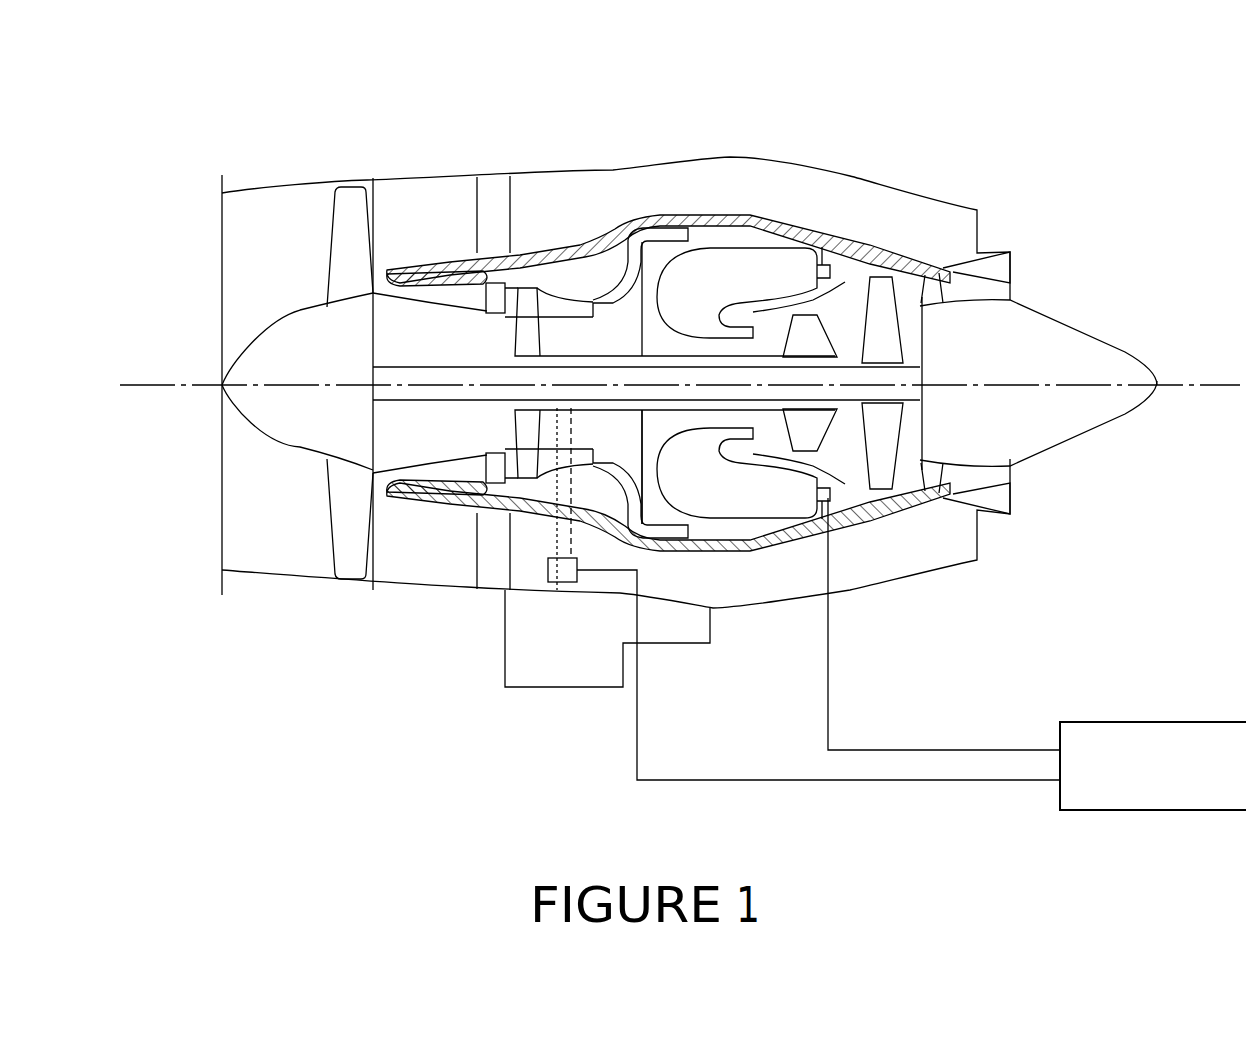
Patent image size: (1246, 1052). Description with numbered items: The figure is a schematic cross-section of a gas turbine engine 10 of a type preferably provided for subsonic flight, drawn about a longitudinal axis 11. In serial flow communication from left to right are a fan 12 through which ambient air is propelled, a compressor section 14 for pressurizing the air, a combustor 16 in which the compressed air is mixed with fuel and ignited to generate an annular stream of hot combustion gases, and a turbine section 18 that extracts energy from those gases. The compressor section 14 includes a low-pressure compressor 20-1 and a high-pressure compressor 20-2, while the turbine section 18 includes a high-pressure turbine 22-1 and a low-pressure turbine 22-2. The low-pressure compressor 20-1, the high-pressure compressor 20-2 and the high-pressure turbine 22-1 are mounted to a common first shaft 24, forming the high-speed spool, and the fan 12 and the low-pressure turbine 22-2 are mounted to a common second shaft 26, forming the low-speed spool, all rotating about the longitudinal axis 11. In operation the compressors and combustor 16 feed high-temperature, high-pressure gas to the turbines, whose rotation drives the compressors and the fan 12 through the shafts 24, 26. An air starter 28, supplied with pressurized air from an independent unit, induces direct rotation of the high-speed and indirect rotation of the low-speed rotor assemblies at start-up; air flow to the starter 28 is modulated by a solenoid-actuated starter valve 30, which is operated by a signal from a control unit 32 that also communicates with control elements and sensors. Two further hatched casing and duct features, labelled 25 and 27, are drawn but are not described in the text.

The gas turbine engine 10 is at (864, 119).
The longitudinal axis 11 is at (1189, 383).
The fan 12 is at (346, 509).
The compressor section 14 is at (557, 300).
The combustor 16 is at (738, 263).
The turbine section 18 is at (847, 435).
The low-pressure compressor 20-1 is at (522, 462).
The high-pressure compressor 20-2 is at (644, 410).
The high-pressure turbine 22-1 is at (820, 318).
The low-pressure turbine 22-2 is at (887, 330).
The first shaft 24 is at (745, 405).
The diffuser 25 is at (608, 298).
The second shaft 26 is at (843, 400).
The bleed duct 27 is at (430, 283).
The air starter 28 is at (557, 525).
The starter valve 30 is at (560, 565).
The control unit 32 is at (1240, 803).